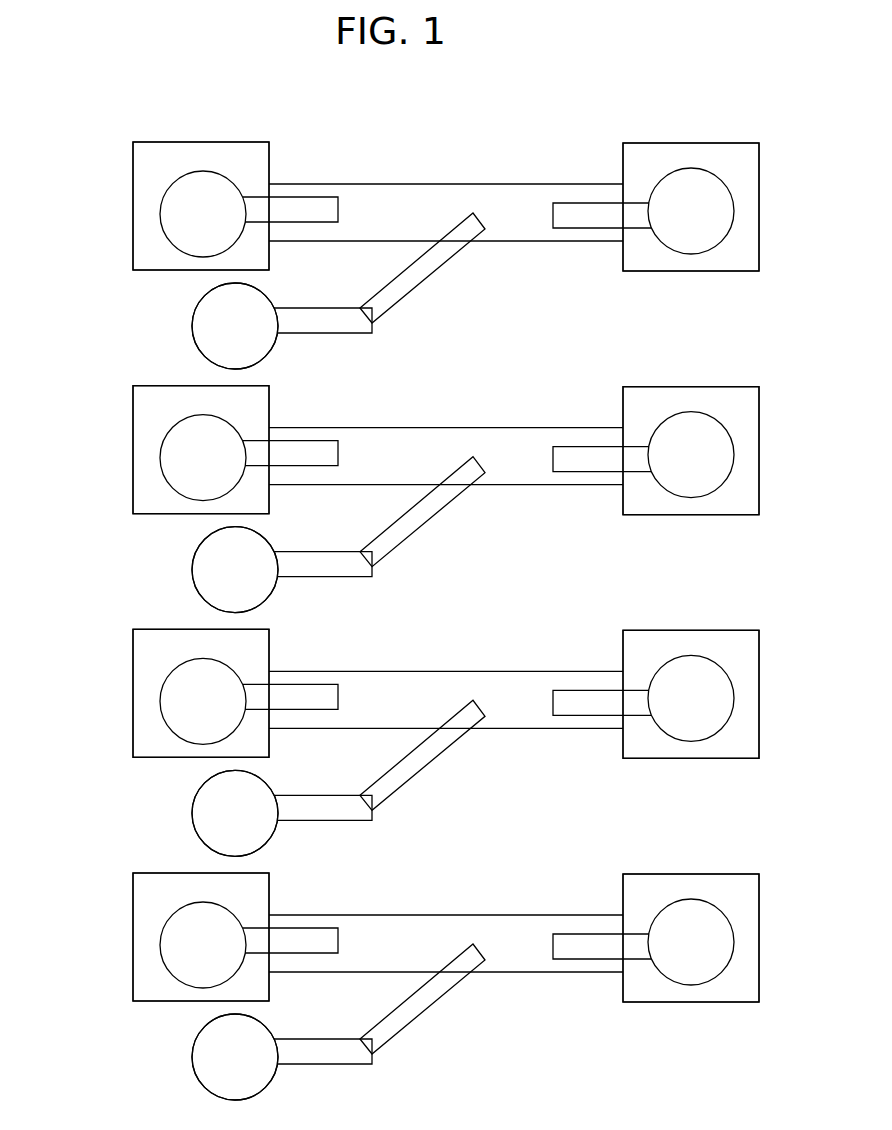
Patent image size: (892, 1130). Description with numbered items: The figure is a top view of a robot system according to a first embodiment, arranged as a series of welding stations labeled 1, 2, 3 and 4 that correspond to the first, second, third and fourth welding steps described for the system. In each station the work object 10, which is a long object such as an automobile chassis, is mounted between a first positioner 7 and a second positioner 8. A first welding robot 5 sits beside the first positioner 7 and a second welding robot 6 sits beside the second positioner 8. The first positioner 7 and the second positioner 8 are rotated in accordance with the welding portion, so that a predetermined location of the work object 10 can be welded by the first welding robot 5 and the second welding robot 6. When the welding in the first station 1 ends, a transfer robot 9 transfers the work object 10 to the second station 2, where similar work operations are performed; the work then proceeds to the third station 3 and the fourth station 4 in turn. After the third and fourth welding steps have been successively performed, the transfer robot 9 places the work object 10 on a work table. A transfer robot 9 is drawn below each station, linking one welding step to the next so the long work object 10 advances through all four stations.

The first unit 1 is at (67, 78).
The second unit 2 is at (396, 458).
The third unit 3 is at (401, 701).
The fourth unit 4 is at (407, 942).
The first welding robot 5 is at (193, 579).
The second welding robot 6 is at (695, 576).
The first positioner 7 is at (201, 533).
The second positioner 8 is at (677, 535).
The transfer robot 9 is at (220, 673).
The work object 10 is at (446, 579).